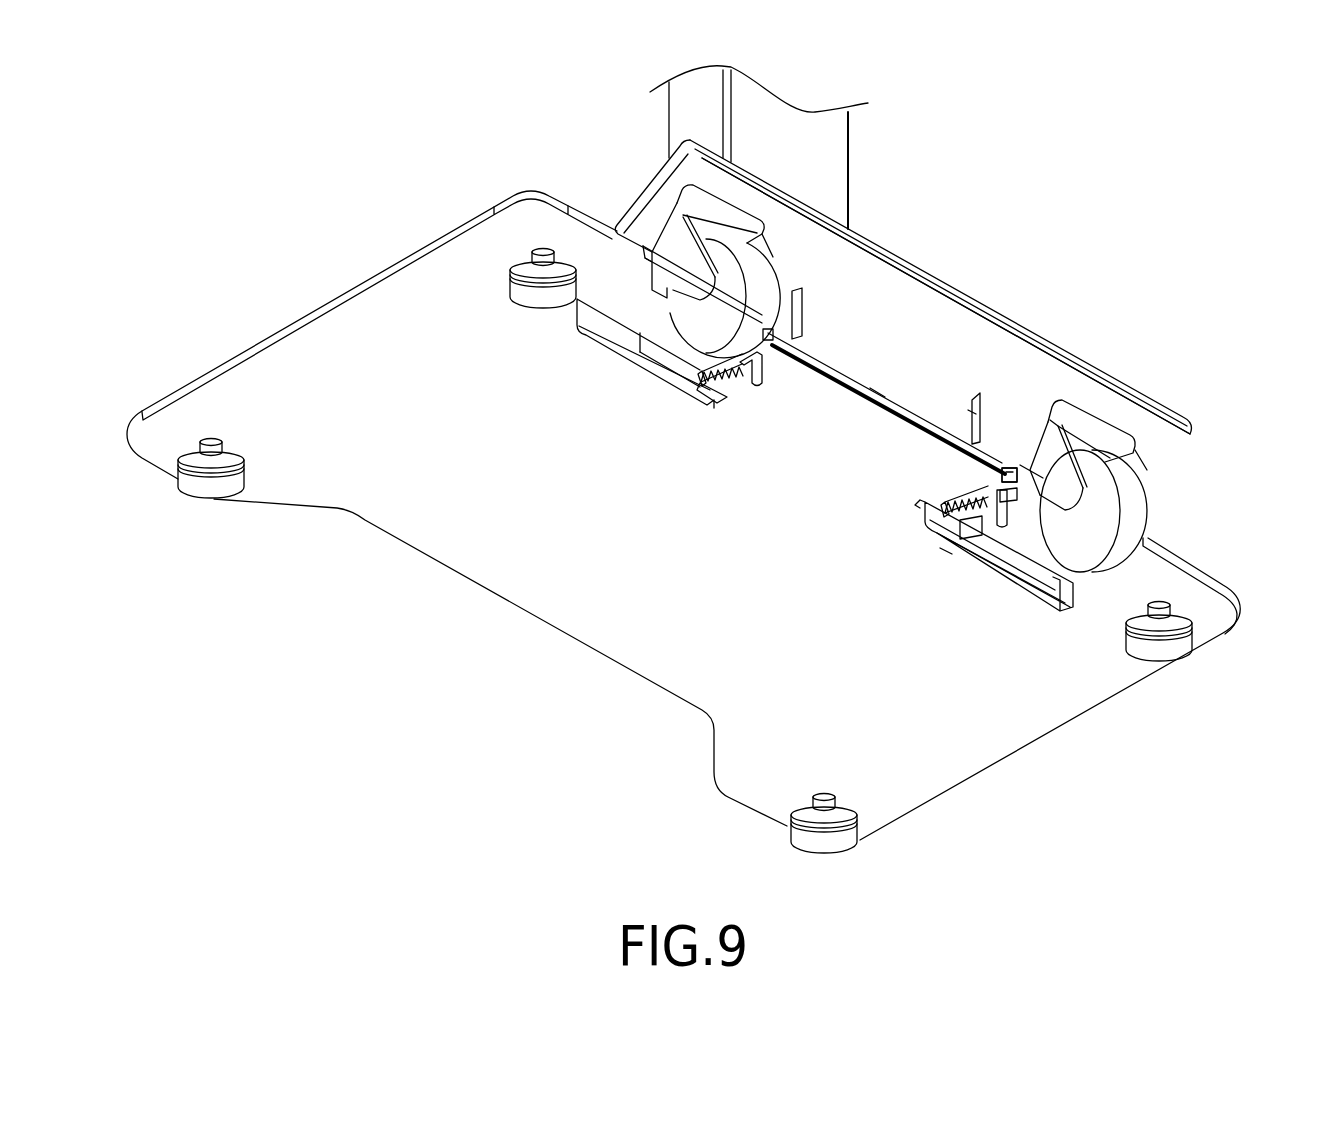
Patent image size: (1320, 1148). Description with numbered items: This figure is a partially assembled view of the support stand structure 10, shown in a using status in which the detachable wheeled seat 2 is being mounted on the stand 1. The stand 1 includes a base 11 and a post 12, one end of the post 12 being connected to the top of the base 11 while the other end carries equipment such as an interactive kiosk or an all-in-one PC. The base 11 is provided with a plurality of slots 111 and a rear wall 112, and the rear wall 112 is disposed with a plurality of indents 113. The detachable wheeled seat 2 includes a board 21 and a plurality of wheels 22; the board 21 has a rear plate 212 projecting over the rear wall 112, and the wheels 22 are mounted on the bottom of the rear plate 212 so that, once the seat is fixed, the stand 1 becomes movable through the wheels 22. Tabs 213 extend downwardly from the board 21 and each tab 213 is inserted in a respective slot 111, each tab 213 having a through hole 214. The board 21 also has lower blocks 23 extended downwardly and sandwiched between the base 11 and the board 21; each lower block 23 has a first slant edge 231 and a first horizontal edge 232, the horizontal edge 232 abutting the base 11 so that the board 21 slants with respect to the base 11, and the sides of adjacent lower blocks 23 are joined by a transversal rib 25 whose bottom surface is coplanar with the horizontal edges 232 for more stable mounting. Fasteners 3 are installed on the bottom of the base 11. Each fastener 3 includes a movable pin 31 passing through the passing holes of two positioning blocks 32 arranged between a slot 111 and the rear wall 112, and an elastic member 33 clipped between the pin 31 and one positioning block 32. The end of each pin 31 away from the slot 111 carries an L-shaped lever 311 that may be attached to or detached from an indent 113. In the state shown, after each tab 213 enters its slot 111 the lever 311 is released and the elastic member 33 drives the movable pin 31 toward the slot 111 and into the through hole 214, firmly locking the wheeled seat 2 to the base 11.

The support stand structure 10 is at (520, 68).
The stand 1 is at (866, 140).
The post 12 is at (827, 165).
The detachable wheeled seat 2 is at (859, 276).
The board 21 is at (636, 189).
The rear plate 212 is at (1003, 355).
The tab 213 is at (612, 330).
The through hole 214 is at (712, 406).
The wheel 22 is at (694, 356).
The lower block 23 is at (967, 410).
The first slant edge 231 is at (962, 412).
The first horizontal edge 232 is at (805, 342).
The transversal rib 25 is at (853, 372).
The fastener 3 is at (865, 496).
The movable pin 31 is at (977, 467).
The L-shaped lever 311 is at (1013, 532).
The positioning block 32 is at (950, 532).
The elastic member 33 is at (973, 537).
The base 11 is at (621, 609).
The slot 111 is at (640, 337).
The rear wall 112 is at (878, 393).
The indent 113 is at (1010, 468).